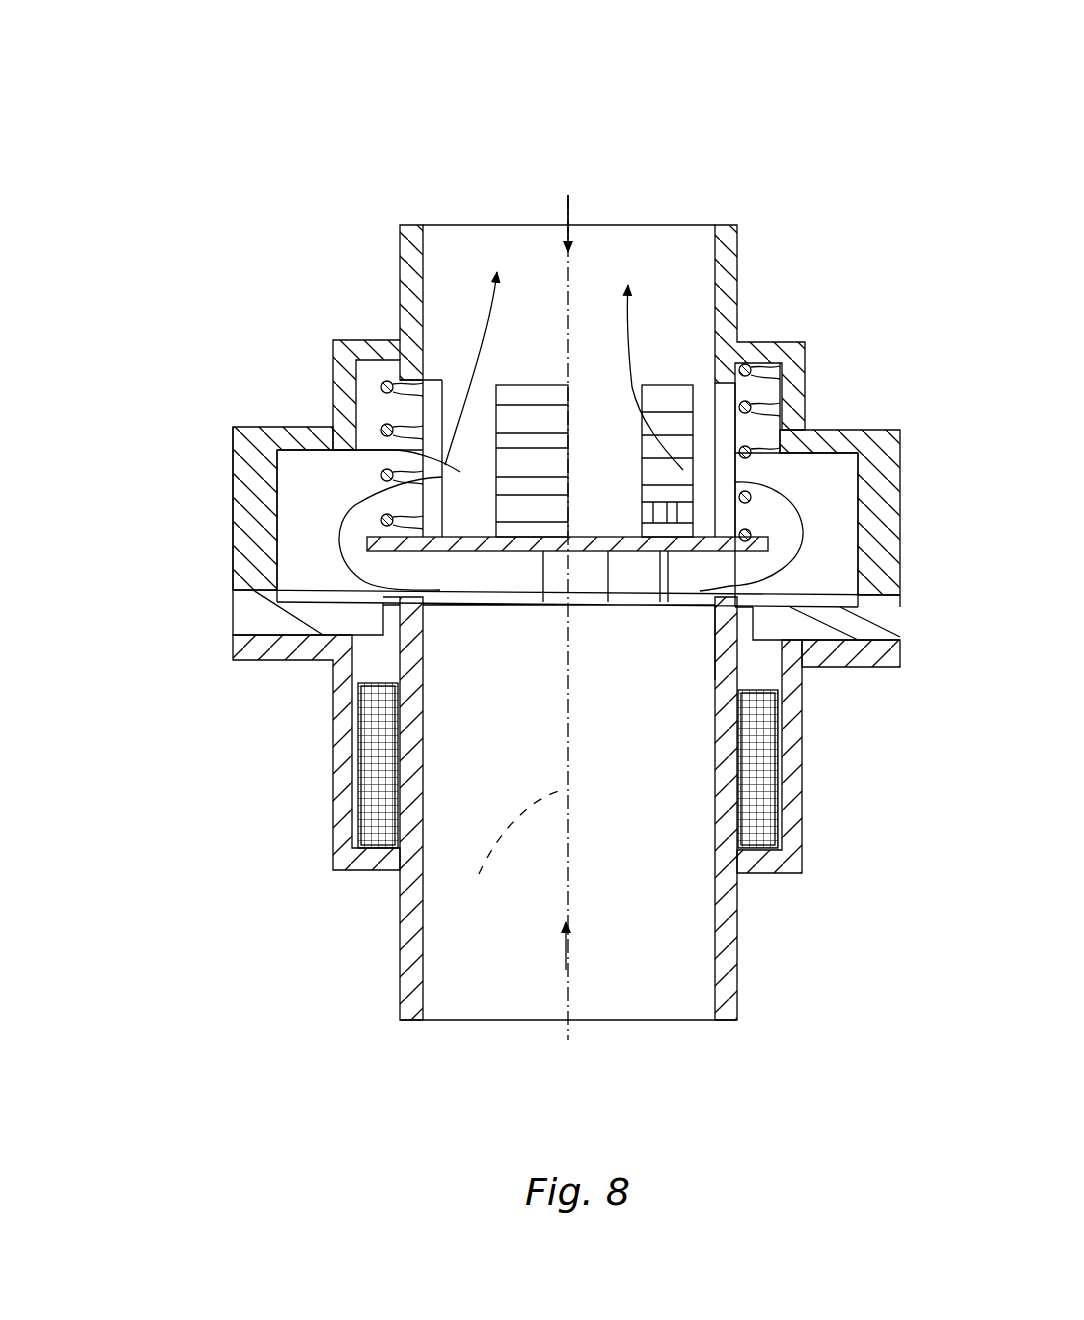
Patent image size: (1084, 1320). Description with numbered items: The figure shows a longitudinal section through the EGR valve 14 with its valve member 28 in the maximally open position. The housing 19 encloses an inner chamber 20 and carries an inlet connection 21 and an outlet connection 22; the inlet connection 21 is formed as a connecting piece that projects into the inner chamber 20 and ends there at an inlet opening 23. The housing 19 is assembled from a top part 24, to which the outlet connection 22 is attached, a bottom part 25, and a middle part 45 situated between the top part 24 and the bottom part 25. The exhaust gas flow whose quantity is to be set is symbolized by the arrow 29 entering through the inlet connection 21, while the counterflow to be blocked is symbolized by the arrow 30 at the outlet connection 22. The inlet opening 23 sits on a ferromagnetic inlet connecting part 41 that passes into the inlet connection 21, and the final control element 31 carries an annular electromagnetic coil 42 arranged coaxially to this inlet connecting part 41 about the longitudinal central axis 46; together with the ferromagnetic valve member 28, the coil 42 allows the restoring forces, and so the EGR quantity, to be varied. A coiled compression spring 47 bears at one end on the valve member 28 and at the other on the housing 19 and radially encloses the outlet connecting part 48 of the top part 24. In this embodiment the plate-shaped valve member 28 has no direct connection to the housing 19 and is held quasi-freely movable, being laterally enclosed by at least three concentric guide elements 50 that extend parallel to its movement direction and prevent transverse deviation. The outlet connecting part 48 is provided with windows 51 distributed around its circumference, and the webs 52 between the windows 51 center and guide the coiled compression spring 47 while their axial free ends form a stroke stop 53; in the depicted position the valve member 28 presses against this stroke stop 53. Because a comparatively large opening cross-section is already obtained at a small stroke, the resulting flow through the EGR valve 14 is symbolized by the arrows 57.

The EGR valve 14 is at (222, 150).
The housing 19 is at (225, 488).
The inner chamber 20 is at (302, 527).
The inlet connection 21 is at (723, 983).
The outlet connection 22 is at (727, 243).
The inlet opening 23 is at (725, 537).
The top part 24 is at (250, 447).
The bottom part 25 is at (297, 652).
The valve member 28 is at (540, 556).
The arrow 29 is at (567, 956).
The arrow 30 is at (571, 232).
The final control element 31 is at (803, 841).
The inlet connecting part 41 is at (718, 672).
The electromagnetic coil 42 is at (760, 778).
The middle part 45 is at (253, 615).
The longitudinal central axis 46 is at (515, 844).
The coiled compression spring 47 is at (380, 473).
The outlet connecting part 48 is at (412, 377).
The guide elements 50 is at (634, 572).
The windows 51 is at (677, 423).
The webs 52 is at (597, 470).
The stroke stop 53 is at (470, 540).
The arrows 57 is at (668, 652).